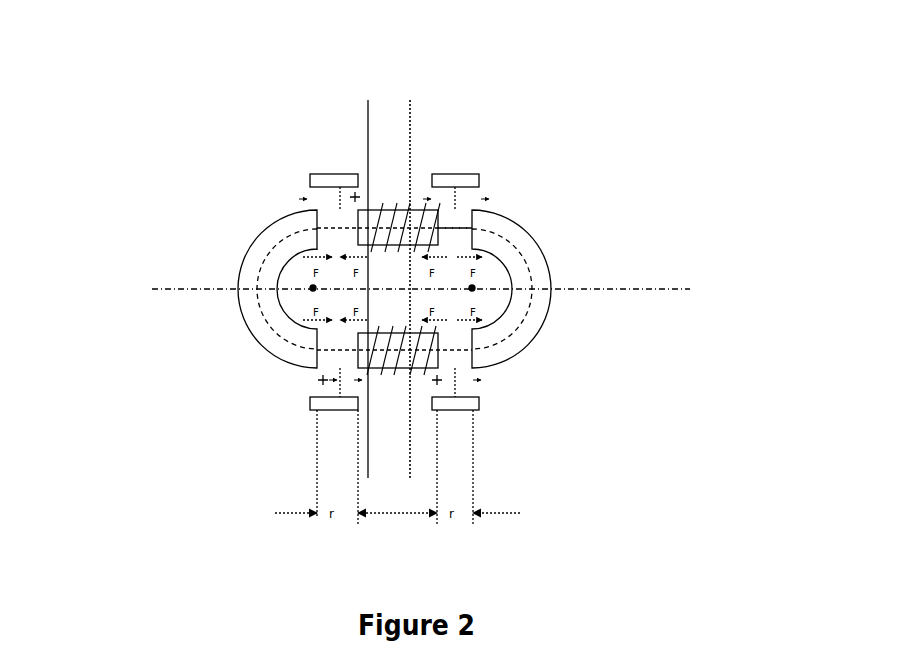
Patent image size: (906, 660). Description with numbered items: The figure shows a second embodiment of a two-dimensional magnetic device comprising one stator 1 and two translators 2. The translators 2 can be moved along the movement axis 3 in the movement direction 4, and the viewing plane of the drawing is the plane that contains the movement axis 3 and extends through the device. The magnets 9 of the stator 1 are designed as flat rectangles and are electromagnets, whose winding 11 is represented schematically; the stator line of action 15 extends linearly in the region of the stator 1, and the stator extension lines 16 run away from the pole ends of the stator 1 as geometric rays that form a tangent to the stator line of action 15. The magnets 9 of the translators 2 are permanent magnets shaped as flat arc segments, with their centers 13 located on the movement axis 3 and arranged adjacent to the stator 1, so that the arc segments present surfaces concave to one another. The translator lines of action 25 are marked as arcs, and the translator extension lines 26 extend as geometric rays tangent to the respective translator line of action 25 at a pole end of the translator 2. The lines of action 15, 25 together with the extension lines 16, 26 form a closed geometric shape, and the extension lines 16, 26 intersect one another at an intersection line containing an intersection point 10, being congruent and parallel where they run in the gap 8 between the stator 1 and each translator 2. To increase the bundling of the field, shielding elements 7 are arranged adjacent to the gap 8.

The stator 1 is at (440, 142).
The translator 2 is at (222, 237).
The movement axis 3 is at (600, 288).
The movement direction 4 is at (423, 71).
The magnet shielding element 7 is at (333, 225).
The gap 8 is at (341, 174).
The magnets 9 is at (248, 305).
The intersection point 10 is at (394, 291).
The winding 11 is at (384, 210).
The centers 13 is at (392, 289).
The stator line of action 15 is at (420, 233).
The geometric stator extension line 16 is at (394, 291).
The translator line of action 25 is at (280, 342).
The geometric translator extension line 26 is at (322, 208).